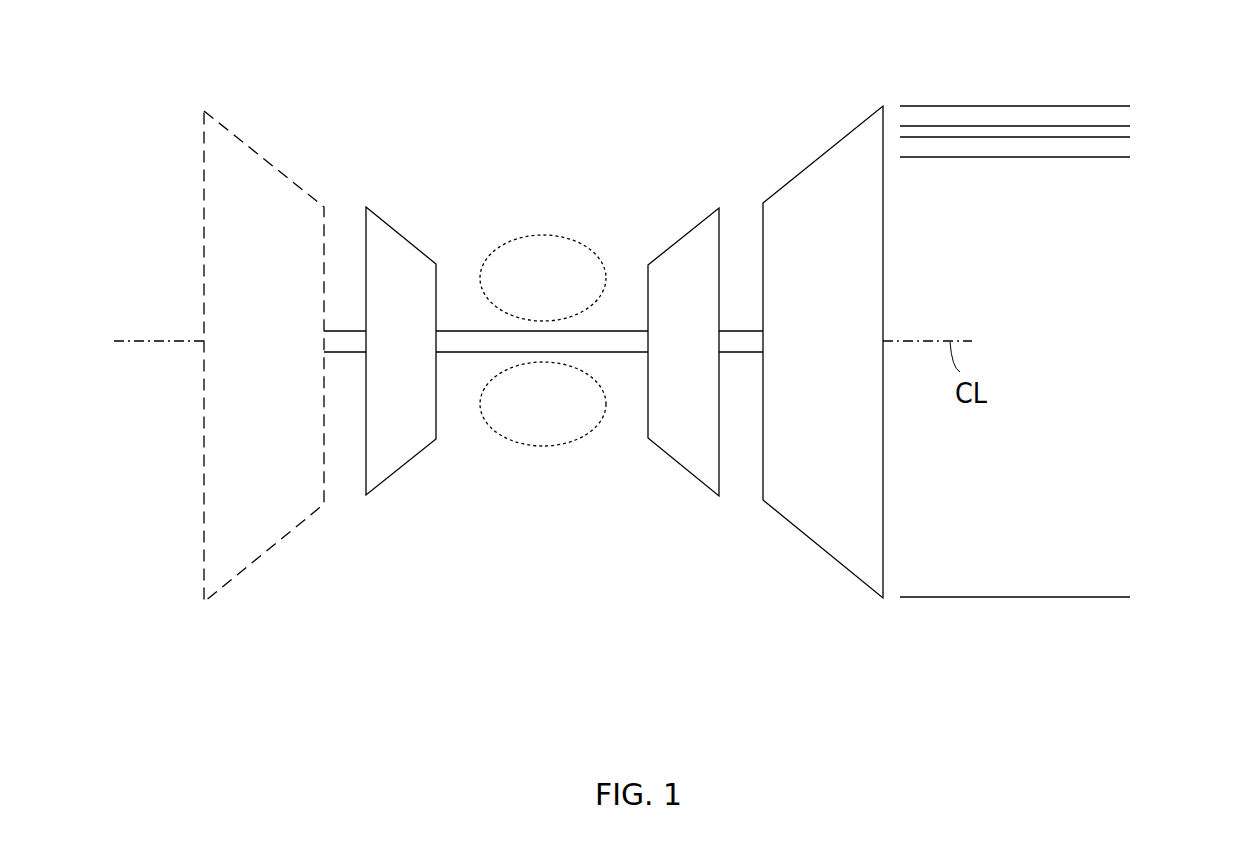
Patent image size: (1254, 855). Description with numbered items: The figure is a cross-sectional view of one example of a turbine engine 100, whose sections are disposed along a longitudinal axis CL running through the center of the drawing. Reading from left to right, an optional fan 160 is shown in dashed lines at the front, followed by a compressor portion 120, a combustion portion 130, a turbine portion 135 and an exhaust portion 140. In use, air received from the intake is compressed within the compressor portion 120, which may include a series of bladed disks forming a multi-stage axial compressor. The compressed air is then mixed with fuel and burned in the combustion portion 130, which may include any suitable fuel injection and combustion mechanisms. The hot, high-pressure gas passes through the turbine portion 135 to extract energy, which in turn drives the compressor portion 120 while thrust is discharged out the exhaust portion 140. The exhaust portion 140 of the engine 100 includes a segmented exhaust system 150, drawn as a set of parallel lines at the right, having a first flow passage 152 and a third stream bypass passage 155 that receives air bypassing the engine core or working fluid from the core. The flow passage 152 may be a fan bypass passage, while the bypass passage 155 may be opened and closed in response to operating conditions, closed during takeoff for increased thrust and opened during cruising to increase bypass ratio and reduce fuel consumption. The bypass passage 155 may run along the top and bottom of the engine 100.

The turbine engine 100 is at (408, 183).
The compressor portion 120 is at (407, 434).
The combustion portion 130 is at (563, 424).
The turbine portion 135 is at (697, 145).
The exhaust portion 140 is at (1047, 583).
The segmented exhaust system 150 is at (1027, 80).
The first flow passage 152 is at (1108, 150).
The third stream bypass passage 155 is at (1098, 112).
The fan 160 is at (266, 533).